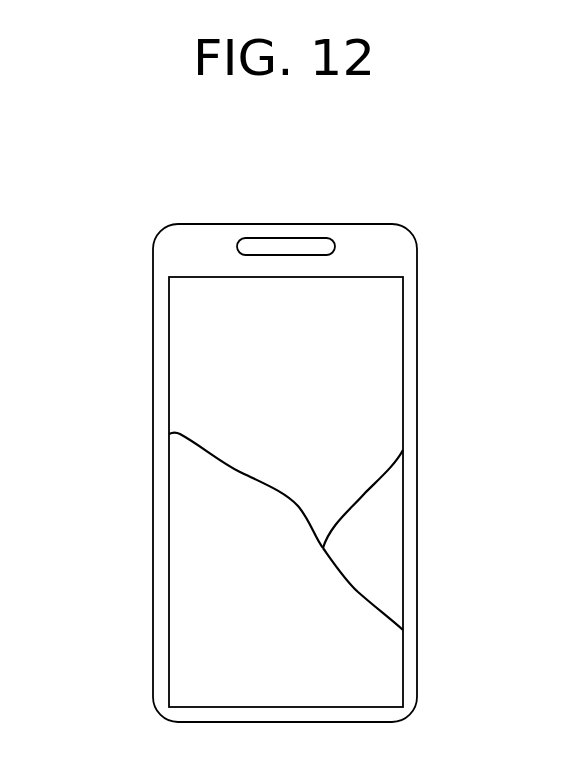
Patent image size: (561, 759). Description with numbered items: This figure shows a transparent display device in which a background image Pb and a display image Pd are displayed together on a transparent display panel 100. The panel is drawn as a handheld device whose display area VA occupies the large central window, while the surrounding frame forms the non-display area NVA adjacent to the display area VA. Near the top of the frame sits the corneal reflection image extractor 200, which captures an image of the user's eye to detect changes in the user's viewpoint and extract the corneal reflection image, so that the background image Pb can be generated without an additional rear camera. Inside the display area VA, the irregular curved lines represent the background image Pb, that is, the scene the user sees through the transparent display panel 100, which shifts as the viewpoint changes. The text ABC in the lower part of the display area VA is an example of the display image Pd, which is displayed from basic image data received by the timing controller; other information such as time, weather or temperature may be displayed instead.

The transparent display panel 100 is at (403, 488).
The corneal reflection image extractor 200 is at (285, 236).
The non-display area NVA is at (393, 250).
The display area VA is at (80, 530).
The background image Pb is at (183, 540).
The display image Pd is at (187, 640).